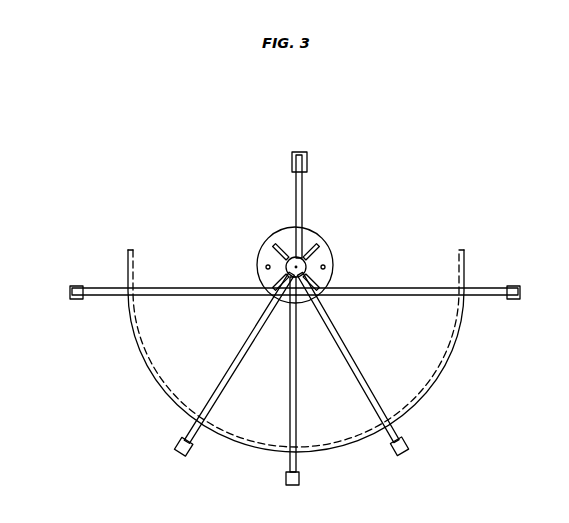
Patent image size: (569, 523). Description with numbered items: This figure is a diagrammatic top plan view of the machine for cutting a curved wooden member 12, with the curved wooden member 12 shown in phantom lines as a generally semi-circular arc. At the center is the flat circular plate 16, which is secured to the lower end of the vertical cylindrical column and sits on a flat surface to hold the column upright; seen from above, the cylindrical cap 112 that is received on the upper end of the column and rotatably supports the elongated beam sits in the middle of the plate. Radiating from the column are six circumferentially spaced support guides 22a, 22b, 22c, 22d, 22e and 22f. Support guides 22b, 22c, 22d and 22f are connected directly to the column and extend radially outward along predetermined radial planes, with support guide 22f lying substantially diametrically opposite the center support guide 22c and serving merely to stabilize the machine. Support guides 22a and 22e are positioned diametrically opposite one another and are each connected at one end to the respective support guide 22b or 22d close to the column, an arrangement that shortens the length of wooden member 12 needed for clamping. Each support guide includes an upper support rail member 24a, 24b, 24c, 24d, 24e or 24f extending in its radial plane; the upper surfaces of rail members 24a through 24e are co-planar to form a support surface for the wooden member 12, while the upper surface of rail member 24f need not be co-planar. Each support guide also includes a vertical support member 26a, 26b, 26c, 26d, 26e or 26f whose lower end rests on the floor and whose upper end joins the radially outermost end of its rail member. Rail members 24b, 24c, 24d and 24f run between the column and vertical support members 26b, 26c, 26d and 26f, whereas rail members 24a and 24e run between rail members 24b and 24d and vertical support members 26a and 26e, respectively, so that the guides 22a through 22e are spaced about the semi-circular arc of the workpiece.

The curved wooden member 12 is at (138, 342).
The flat circular plate 16 is at (312, 237).
The cylindrical cap 112 is at (305, 265).
The support guide 22a is at (155, 293).
The support guide 22b is at (206, 376).
The support guide 22c is at (290, 393).
The support guide 22d is at (380, 373).
The support guide 22e is at (428, 301).
The support guide 22f is at (308, 198).
The upper support rail member 24a is at (222, 288).
The upper support rail member 24b is at (238, 363).
The upper support rail member 24c is at (290, 428).
The upper support rail member 24d is at (363, 380).
The upper support rail member 24e is at (386, 289).
The upper support rail member 24f is at (296, 187).
The vertical support member 26a is at (81, 300).
The vertical support member 26b is at (190, 454).
The vertical support member 26c is at (299, 479).
The vertical support member 26d is at (408, 453).
The vertical support member 26e is at (513, 288).
The vertical support member 26f is at (306, 158).